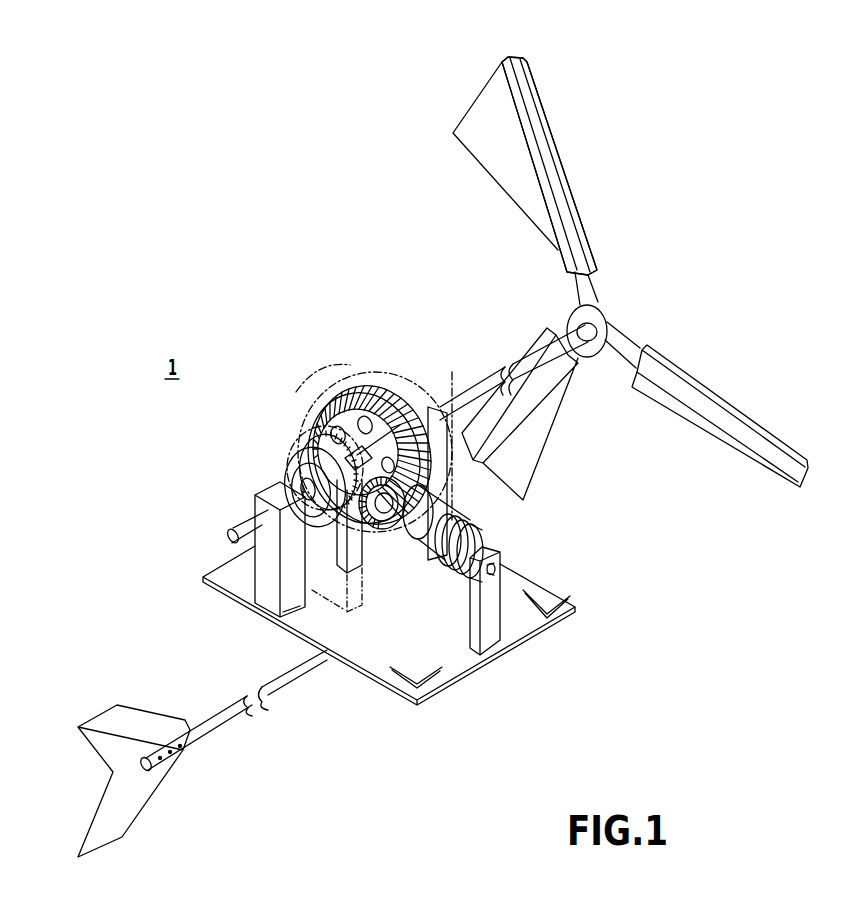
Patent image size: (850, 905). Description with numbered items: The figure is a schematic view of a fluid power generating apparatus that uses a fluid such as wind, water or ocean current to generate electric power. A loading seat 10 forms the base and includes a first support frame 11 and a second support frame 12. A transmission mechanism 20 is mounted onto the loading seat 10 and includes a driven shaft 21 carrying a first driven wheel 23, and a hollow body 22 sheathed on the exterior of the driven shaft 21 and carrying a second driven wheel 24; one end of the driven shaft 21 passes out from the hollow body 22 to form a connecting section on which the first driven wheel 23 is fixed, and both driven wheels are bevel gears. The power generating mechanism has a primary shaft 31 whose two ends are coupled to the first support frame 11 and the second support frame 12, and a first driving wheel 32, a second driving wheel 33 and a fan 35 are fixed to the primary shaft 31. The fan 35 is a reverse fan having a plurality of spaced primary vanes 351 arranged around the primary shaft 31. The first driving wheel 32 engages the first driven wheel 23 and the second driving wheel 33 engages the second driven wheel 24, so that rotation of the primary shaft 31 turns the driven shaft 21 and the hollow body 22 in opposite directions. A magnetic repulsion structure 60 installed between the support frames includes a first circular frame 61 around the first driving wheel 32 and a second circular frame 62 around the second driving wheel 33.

The loading seat 10 is at (532, 638).
The first support frame 11 is at (432, 450).
The second support frame 12 is at (268, 488).
The transmission mechanism 20 is at (471, 511).
The driven shaft 21 is at (500, 570).
The hollow body 22 is at (423, 543).
The first driven wheel 23 is at (398, 420).
The second driven wheel 24 is at (385, 540).
The primary shaft 31 is at (224, 530).
The first driving wheel 32 is at (277, 467).
The second driving wheel 33 is at (327, 405).
The fan 35 is at (606, 229).
The primary vanes 351 is at (568, 178).
The magnetic repulsion structure 60 is at (331, 362).
The first circular frame 61 is at (298, 433).
The second circular frame 62 is at (385, 368).